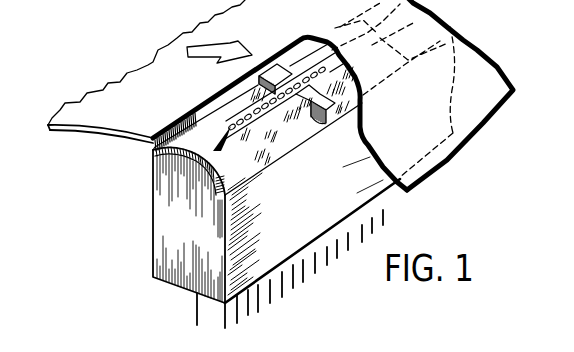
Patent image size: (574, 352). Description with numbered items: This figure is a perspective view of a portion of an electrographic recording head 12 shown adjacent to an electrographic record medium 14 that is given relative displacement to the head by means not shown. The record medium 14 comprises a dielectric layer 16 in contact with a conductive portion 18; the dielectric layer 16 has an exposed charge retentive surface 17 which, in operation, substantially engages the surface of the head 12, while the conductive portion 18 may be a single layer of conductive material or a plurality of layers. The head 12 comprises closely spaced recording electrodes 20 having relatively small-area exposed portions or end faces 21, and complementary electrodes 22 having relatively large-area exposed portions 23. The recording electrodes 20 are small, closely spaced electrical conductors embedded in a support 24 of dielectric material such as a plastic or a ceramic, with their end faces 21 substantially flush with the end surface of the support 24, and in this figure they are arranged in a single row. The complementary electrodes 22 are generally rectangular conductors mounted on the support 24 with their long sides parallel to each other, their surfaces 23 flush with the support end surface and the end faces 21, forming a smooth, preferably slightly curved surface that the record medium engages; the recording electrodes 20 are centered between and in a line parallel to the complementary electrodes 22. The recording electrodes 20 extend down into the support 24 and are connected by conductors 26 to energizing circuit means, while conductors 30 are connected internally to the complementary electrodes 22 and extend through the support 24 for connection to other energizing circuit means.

The head 12 is at (146, 217).
The electrographic record medium 14 is at (195, 21).
The dielectric layer 16 is at (64, 131).
The exposed charge retentive surface 17 is at (105, 135).
The conductive portion 18 is at (105, 95).
The recording electrodes 20 is at (158, 145).
The end faces 21 is at (213, 158).
The complementary electrodes 22 is at (218, 96).
The exposed portions 23 is at (208, 121).
The support 24 is at (178, 226).
The conductors 26 is at (230, 322).
The conductors 30 is at (196, 302).